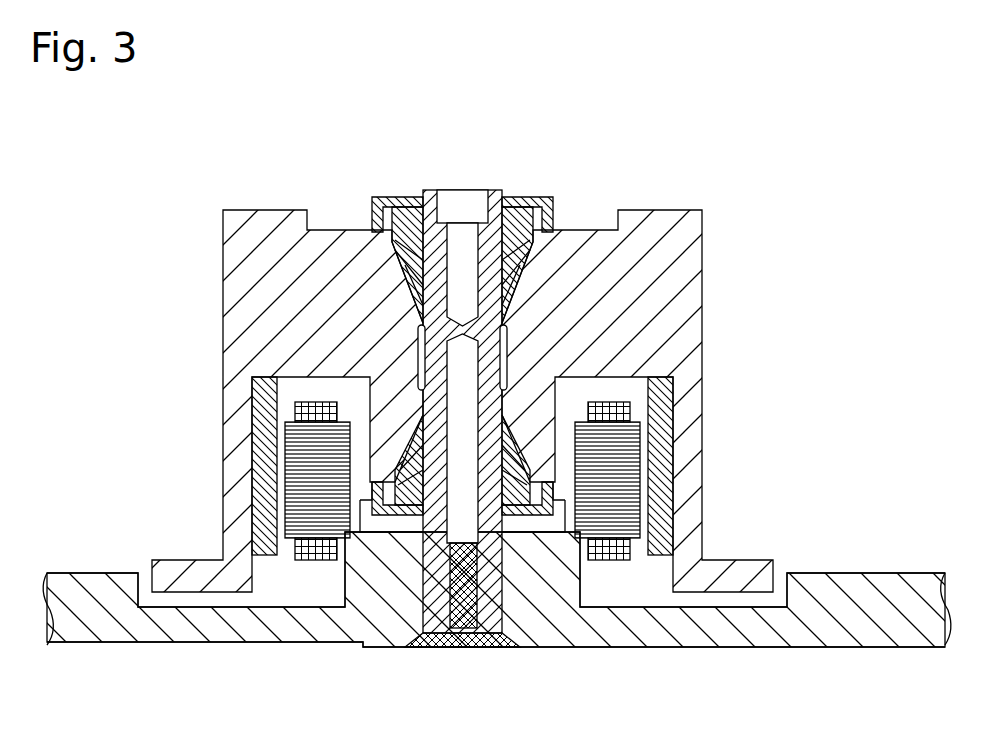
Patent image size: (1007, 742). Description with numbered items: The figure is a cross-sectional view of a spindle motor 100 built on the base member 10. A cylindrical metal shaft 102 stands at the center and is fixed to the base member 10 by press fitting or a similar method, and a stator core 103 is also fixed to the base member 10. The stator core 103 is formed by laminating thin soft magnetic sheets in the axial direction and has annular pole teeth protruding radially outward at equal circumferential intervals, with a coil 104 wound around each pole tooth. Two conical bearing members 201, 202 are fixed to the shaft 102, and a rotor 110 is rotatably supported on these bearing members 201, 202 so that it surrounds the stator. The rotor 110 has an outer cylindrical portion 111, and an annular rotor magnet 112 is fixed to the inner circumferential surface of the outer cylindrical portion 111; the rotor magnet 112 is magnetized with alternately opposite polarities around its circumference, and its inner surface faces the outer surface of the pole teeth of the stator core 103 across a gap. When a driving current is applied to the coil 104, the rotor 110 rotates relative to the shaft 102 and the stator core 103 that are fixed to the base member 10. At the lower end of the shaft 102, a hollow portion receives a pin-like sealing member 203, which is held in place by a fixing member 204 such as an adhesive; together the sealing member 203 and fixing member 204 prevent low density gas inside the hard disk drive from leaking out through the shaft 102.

The base member 10 is at (862, 600).
The spindle motor 100 is at (469, 405).
The shaft 102 is at (430, 470).
The stator core 103 is at (580, 540).
The coil 104 is at (310, 415).
The rotor 110 is at (469, 355).
The outer cylindrical portion 111 is at (688, 482).
The rotor magnet 112 is at (660, 430).
The bearing member 201 is at (444, 423).
The bearing member 202 is at (420, 508).
The sealing member 203 is at (533, 520).
The fixing member 204 is at (455, 645).